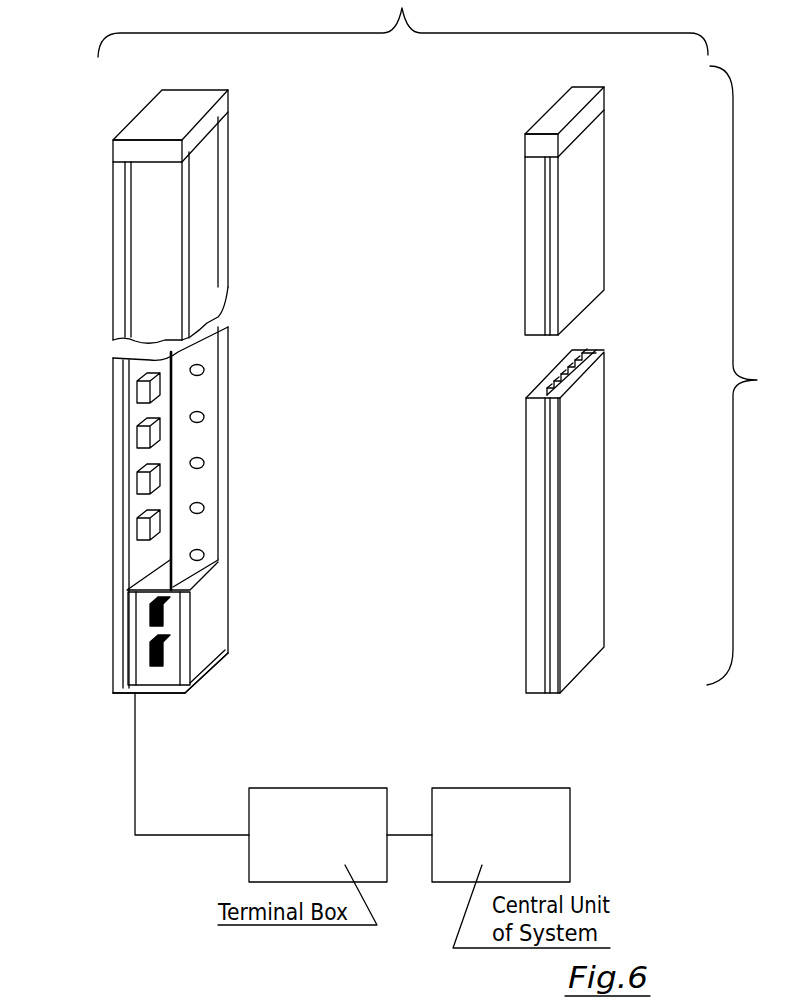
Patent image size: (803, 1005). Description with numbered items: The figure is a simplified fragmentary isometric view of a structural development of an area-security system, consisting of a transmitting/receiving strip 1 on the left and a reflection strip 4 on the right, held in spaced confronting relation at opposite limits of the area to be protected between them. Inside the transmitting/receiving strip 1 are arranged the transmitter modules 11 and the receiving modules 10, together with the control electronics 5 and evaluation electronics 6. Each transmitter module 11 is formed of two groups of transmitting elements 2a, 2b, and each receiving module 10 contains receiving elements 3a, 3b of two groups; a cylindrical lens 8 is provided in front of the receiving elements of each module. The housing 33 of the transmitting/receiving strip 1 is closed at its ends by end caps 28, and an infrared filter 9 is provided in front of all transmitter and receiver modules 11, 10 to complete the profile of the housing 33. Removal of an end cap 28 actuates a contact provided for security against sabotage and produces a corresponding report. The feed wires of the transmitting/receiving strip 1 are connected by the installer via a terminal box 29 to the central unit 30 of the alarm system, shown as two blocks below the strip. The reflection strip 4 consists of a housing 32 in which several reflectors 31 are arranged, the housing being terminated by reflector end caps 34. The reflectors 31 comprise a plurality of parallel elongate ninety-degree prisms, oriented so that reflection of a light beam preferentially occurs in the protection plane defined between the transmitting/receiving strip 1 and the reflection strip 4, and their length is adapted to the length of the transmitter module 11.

The transmitting/receiving strip 1 is at (150, 225).
The transmitting elements 2a is at (245, 555).
The transmitting elements 2b is at (245, 508).
The receiving elements 3a is at (165, 643).
The receiving elements 3b is at (165, 600).
The reflection strip 4 is at (588, 198).
The control electronics 5 is at (130, 510).
The evaluation electronics 6 is at (125, 463).
The cylindrical lens 8 is at (197, 660).
The infrared filter 9 is at (210, 192).
The receiving modules 10 is at (150, 637).
The transmitter modules 11 is at (170, 418).
The end caps 28 is at (220, 110).
The terminal box 29 is at (332, 855).
The central unit 30 is at (517, 855).
The reflectors 31 is at (547, 383).
The housing 32 is at (605, 383).
The housing 33 is at (125, 690).
The reflector end caps 34 is at (597, 103).